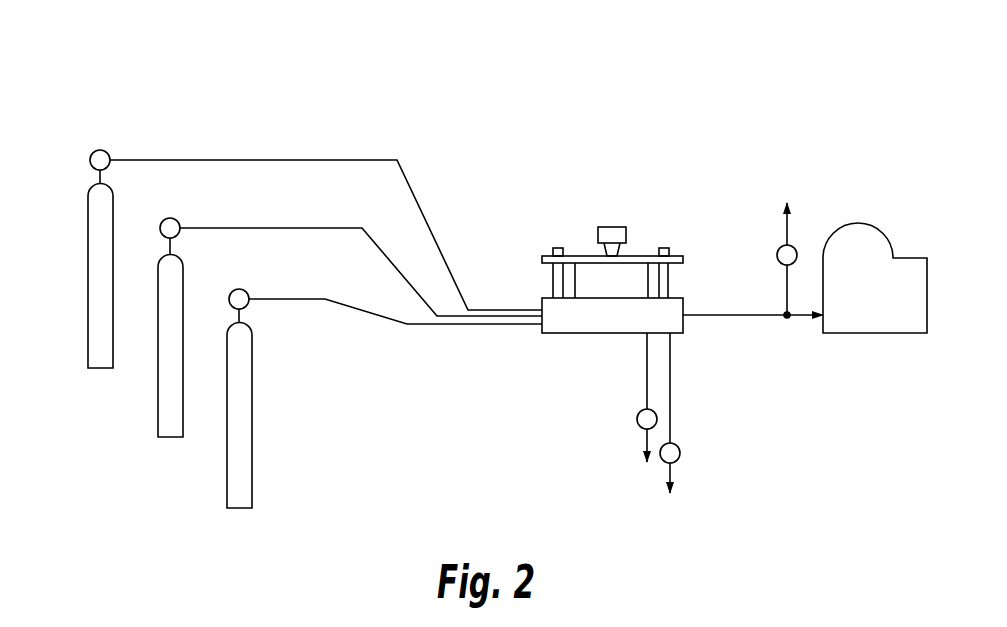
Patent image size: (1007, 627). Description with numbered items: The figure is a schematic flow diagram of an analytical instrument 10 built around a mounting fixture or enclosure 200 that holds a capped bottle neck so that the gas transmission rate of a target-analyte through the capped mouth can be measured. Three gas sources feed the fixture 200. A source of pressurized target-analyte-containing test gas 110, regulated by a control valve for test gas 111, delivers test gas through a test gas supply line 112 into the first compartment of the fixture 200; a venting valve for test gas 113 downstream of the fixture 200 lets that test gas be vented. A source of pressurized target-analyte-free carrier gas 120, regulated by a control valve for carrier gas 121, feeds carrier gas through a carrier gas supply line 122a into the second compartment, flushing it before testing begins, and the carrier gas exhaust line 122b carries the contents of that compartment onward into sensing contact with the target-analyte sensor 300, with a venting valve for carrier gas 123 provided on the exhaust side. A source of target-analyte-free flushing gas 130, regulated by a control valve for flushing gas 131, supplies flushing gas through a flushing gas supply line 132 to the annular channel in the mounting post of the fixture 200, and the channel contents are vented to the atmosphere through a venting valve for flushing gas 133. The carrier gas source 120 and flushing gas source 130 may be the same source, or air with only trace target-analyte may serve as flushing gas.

The analytical instrument 10 is at (480, 82).
The source of pressurized target-analyte-containing test gas 110 is at (237, 495).
The control valve for test gas 111 is at (243, 296).
The test gas supply line 112 is at (423, 325).
The venting valve for test gas 113 is at (676, 446).
The source of pressurized target-analyte-free carrier gas 120 is at (166, 428).
The control valve for carrier gas 121 is at (172, 223).
The carrier gas supply line 122a is at (304, 228).
The carrier gas exhaust line 122b is at (753, 319).
The venting valve for carrier gas 123 is at (780, 250).
The source of target-analyte-free flushing gas 130 is at (92, 358).
The control valve for flushing gas 131 is at (102, 153).
The flushing gas supply line 132 is at (421, 210).
The venting valve for flushing gas 133 is at (643, 426).
The fixture or enclosure 200 is at (633, 220).
The target-analyte sensor 300 is at (872, 245).